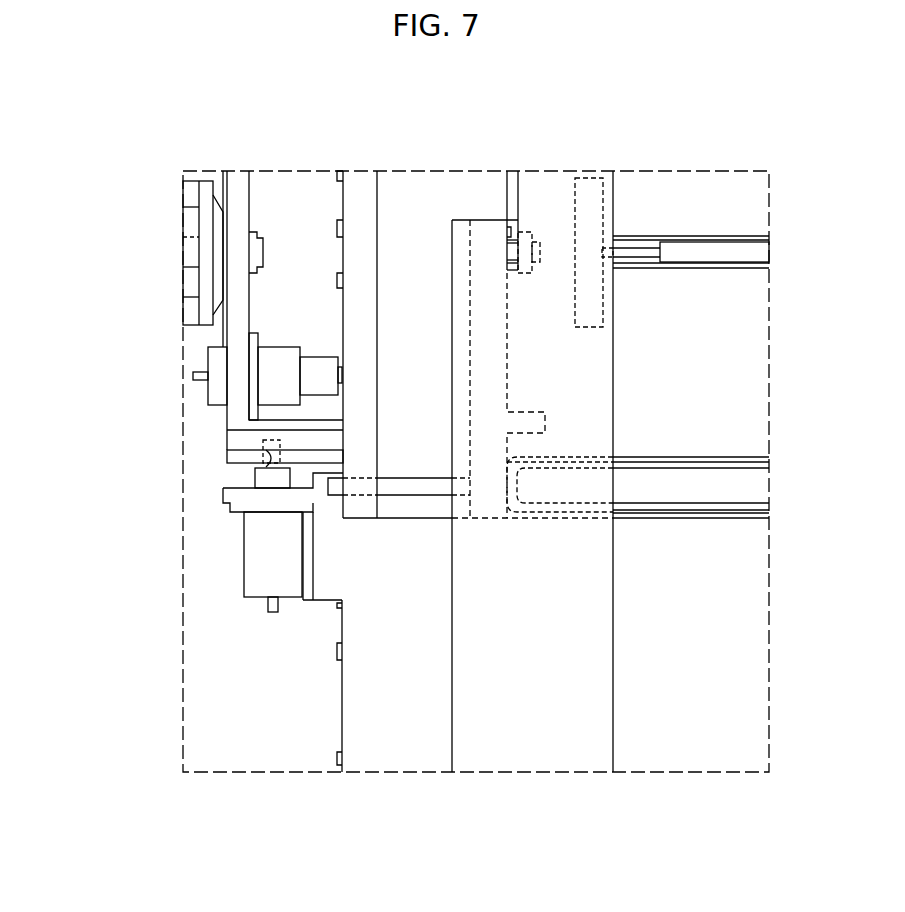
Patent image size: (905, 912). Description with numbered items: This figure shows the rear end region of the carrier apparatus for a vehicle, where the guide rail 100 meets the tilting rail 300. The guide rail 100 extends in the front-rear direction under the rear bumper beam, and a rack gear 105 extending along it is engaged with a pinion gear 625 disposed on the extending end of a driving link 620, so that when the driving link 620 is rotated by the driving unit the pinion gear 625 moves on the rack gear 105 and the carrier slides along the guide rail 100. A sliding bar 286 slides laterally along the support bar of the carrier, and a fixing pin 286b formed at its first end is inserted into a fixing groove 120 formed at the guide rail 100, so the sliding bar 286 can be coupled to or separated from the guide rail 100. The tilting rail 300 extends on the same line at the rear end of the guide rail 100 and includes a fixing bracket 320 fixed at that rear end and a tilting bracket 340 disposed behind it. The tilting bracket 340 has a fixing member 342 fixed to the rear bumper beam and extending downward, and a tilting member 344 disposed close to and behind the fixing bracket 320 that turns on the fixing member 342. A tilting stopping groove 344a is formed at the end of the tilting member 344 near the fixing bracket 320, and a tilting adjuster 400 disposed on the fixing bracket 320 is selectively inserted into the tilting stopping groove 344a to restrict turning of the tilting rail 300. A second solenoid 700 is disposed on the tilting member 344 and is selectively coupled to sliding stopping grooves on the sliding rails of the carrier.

The guide rail 100 is at (405, 741).
The rack gear 105 is at (530, 741).
The fixing groove 120 is at (362, 488).
The sliding bar 286 is at (737, 488).
The fixing pin 286b is at (423, 487).
The tilting rail 300 is at (358, 218).
The fixing bracket 320 is at (327, 528).
The tilting bracket 340 is at (128, 310).
The fixing member 342 is at (208, 229).
The tilting member 344 is at (240, 297).
The tilting stopping groove 344a is at (250, 472).
The tilting adjuster 400 is at (253, 575).
The driving link 620 is at (710, 248).
The pinion gear 625 is at (592, 197).
The second solenoid 700 is at (270, 385).